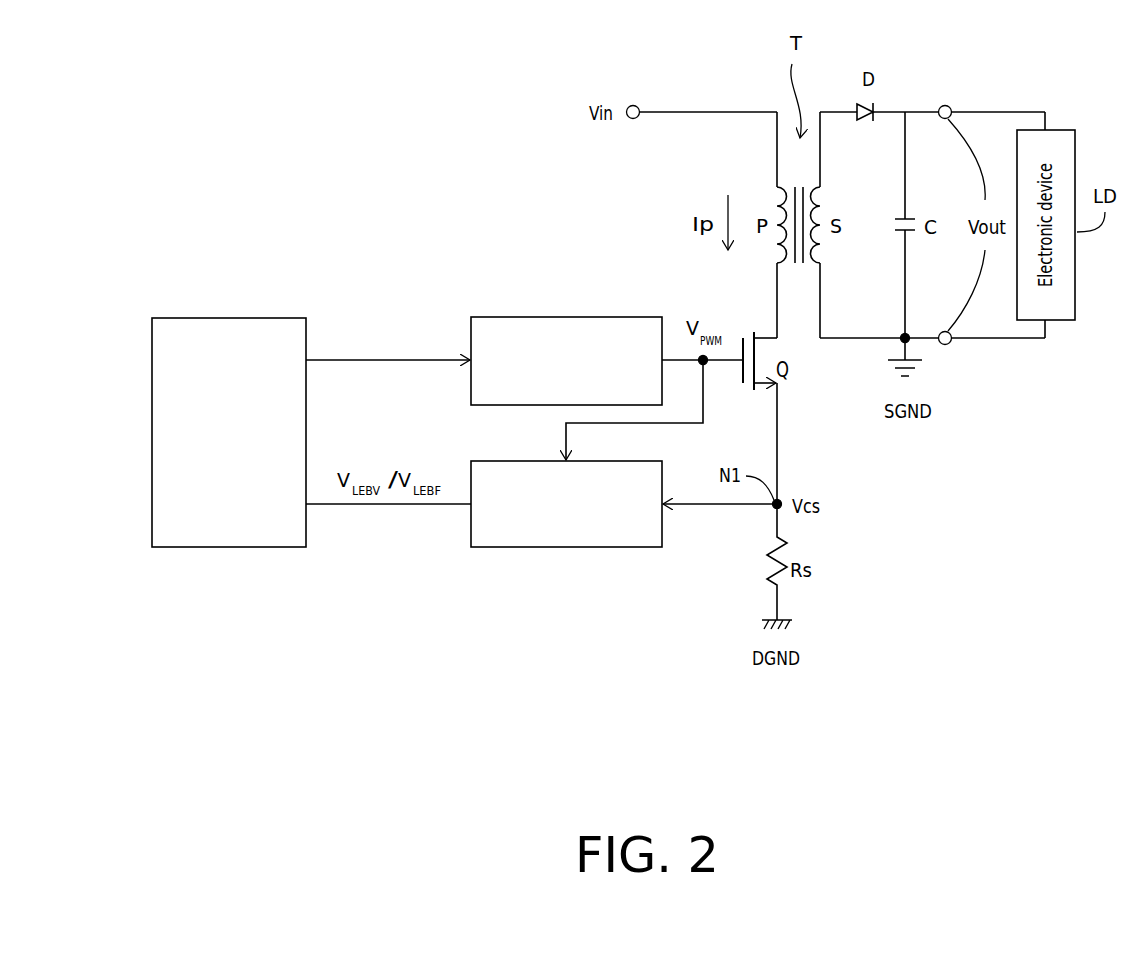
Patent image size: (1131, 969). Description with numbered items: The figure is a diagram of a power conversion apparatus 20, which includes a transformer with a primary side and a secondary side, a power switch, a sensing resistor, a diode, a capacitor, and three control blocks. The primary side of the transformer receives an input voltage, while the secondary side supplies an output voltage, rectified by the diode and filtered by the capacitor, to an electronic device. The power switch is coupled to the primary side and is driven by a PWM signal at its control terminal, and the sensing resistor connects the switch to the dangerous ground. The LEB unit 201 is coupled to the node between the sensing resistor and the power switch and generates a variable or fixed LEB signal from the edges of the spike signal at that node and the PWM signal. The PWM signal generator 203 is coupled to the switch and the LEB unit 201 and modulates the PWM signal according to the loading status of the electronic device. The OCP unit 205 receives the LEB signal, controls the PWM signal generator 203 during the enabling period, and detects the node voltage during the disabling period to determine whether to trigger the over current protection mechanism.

The power conversion apparatus 20 is at (1082, 661).
The leading edge blanking (LEB) unit 201 is at (520, 548).
The pulse width modulation (PWM) signal generator 203 is at (520, 317).
The over current protection (OCP) unit 205 is at (227, 317).